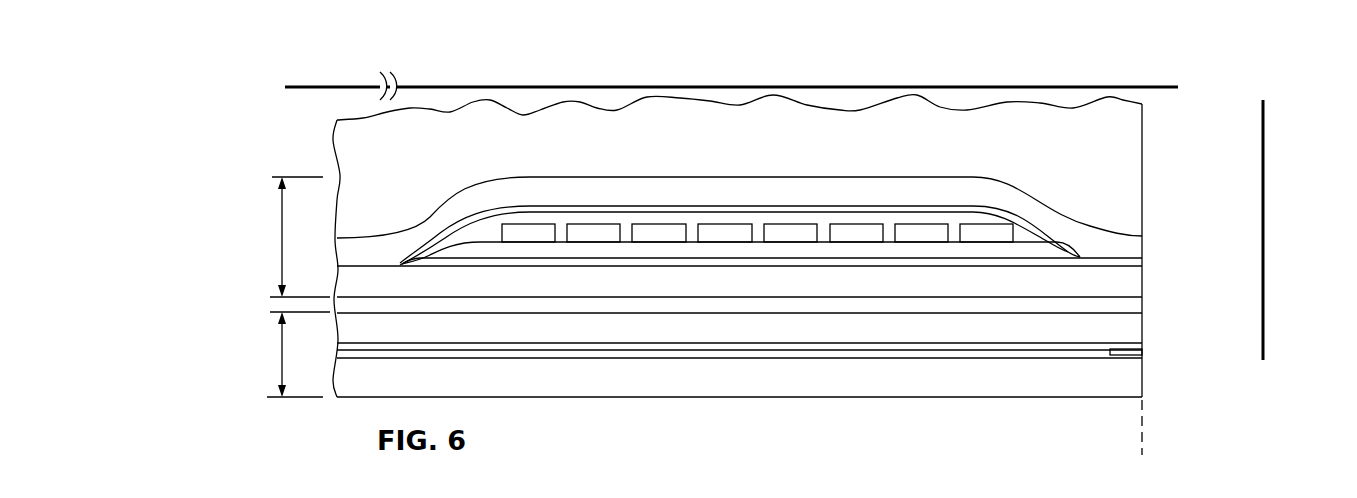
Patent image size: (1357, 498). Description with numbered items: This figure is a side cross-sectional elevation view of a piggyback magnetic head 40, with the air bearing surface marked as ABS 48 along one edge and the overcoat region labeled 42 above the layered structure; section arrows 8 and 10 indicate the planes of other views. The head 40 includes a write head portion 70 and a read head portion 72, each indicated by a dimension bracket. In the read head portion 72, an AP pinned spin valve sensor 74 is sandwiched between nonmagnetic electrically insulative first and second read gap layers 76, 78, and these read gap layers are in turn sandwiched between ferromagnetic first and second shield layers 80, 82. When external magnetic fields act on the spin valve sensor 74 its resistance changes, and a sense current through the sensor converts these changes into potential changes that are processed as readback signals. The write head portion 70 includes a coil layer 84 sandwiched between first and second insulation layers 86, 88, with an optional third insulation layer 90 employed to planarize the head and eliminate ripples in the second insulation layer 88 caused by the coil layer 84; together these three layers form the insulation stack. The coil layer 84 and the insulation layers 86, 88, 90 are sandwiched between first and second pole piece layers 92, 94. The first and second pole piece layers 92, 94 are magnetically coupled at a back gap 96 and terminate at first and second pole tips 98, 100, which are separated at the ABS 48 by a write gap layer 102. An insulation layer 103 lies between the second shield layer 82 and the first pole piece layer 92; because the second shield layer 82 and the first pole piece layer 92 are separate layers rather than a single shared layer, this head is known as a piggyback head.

The section line 8- 8 is at (1275, 107).
The section line 10- 10 is at (293, 78).
The piggyback magnetic head 40 is at (310, 126).
The overcoat layer 42 is at (1127, 133).
The air bearing surface (ABS) 48 is at (1145, 450).
The write head portion 70 is at (282, 246).
The read head portion 72 is at (282, 358).
The AP pinned spin valve sensor 74 is at (1142, 352).
The first read gap layer 76 is at (806, 360).
The second read gap layer 78 is at (775, 343).
The first shield layer 80 is at (908, 383).
The second shield layer 82 is at (1012, 330).
The coil layer 84 is at (788, 230).
The first insulation layer 86 is at (695, 253).
The second insulation layer 88 is at (1030, 233).
The third insulation layer 90 is at (568, 208).
The first pole piece layer 92 is at (1060, 287).
The second pole piece layer 94 is at (922, 190).
The back gap 96 is at (377, 265).
The first pole tip 98 is at (1140, 288).
The second pole tip 100 is at (1135, 240).
The write gap layer 102 is at (1140, 262).
The insulation layer 103 is at (965, 305).